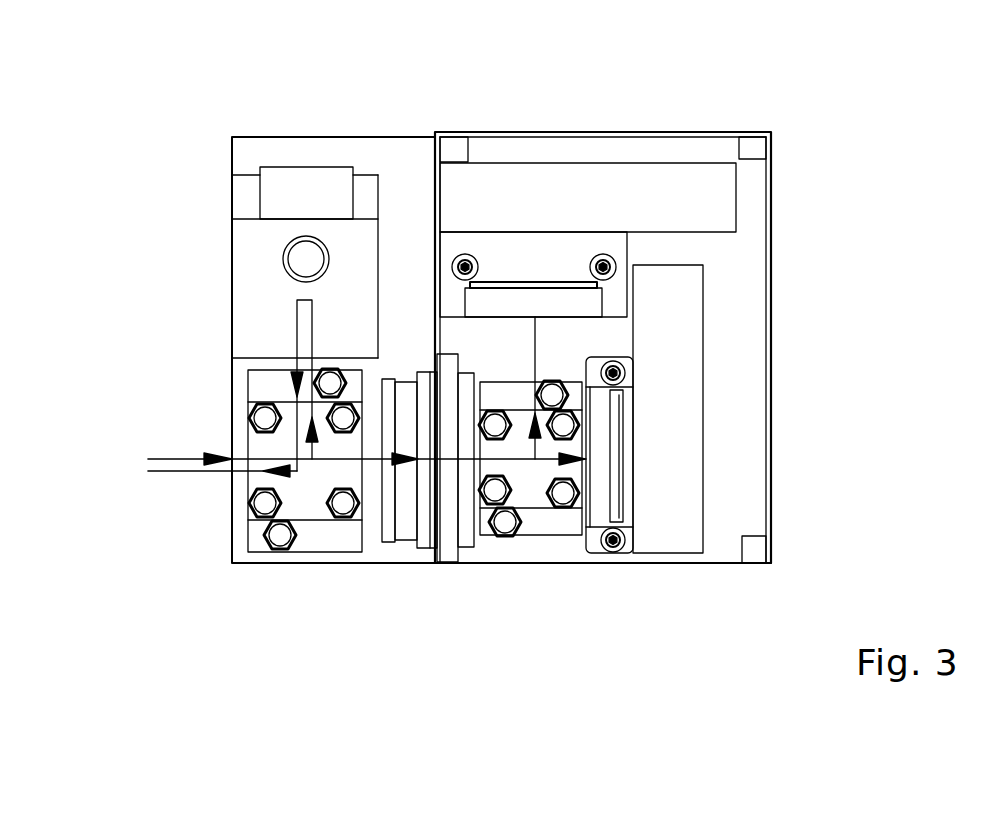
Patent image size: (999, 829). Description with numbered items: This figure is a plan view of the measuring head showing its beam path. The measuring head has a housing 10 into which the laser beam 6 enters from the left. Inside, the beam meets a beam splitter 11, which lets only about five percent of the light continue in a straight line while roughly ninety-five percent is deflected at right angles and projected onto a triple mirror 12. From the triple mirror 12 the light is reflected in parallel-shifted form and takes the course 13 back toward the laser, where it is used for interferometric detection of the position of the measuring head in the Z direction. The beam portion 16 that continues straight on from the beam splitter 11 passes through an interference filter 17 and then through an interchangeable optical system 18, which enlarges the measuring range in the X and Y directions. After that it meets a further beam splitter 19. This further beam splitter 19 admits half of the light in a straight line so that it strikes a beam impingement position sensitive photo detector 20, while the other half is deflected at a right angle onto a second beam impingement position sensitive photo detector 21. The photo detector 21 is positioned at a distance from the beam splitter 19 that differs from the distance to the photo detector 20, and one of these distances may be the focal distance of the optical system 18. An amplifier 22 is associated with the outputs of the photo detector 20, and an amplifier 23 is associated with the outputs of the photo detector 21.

The laser beam 6 is at (178, 457).
The housing 10 is at (774, 360).
The beam splitter 11 is at (285, 523).
The triple mirror 12 is at (265, 262).
The course 13 is at (187, 473).
The beam portion 16 is at (325, 462).
The interference filter 17 is at (402, 507).
The interchangeable optical system 18 is at (427, 518).
The further beam splitter 19 is at (540, 463).
The beam impingement position sensitive photo detector 20 is at (597, 473).
The beam impingement position sensitive photo detector 21 is at (512, 303).
The amplifier 22 is at (658, 290).
The amplifier 23 is at (647, 182).